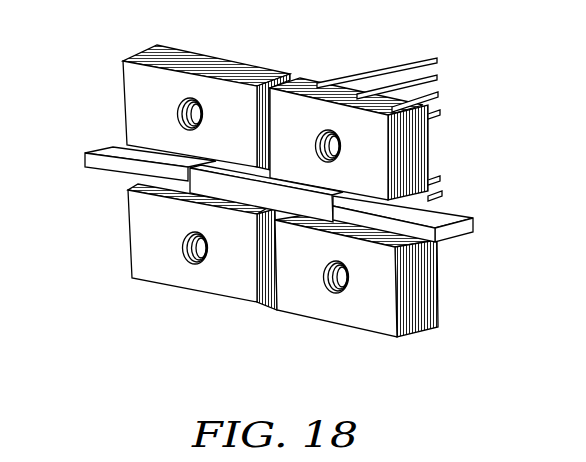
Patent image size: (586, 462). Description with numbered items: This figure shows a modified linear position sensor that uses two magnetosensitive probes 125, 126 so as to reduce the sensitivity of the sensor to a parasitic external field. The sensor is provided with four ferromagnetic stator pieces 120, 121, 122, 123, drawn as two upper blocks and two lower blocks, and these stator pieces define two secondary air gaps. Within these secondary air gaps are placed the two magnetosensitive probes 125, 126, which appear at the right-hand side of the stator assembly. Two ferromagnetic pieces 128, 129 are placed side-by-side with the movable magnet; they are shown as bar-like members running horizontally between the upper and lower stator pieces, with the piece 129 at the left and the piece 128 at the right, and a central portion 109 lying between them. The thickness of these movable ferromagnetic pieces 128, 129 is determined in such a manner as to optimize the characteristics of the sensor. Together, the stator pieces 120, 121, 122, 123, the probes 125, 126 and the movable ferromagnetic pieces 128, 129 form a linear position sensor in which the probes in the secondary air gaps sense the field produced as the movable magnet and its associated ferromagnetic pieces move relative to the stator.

The bus bar center block 109 is at (213, 192).
The ferromagnetic stator piece 120 is at (138, 93).
The ferromagnetic stator piece 121 is at (382, 156).
The ferromagnetic stator piece 122 is at (378, 320).
The ferromagnetic stator piece 123 is at (224, 285).
The magnetosensitive probe 125 is at (440, 61).
The magnetosensitive probe 126 is at (444, 190).
The movable ferromagnetic piece 128 is at (447, 222).
The movable ferromagnetic piece 129 is at (104, 151).